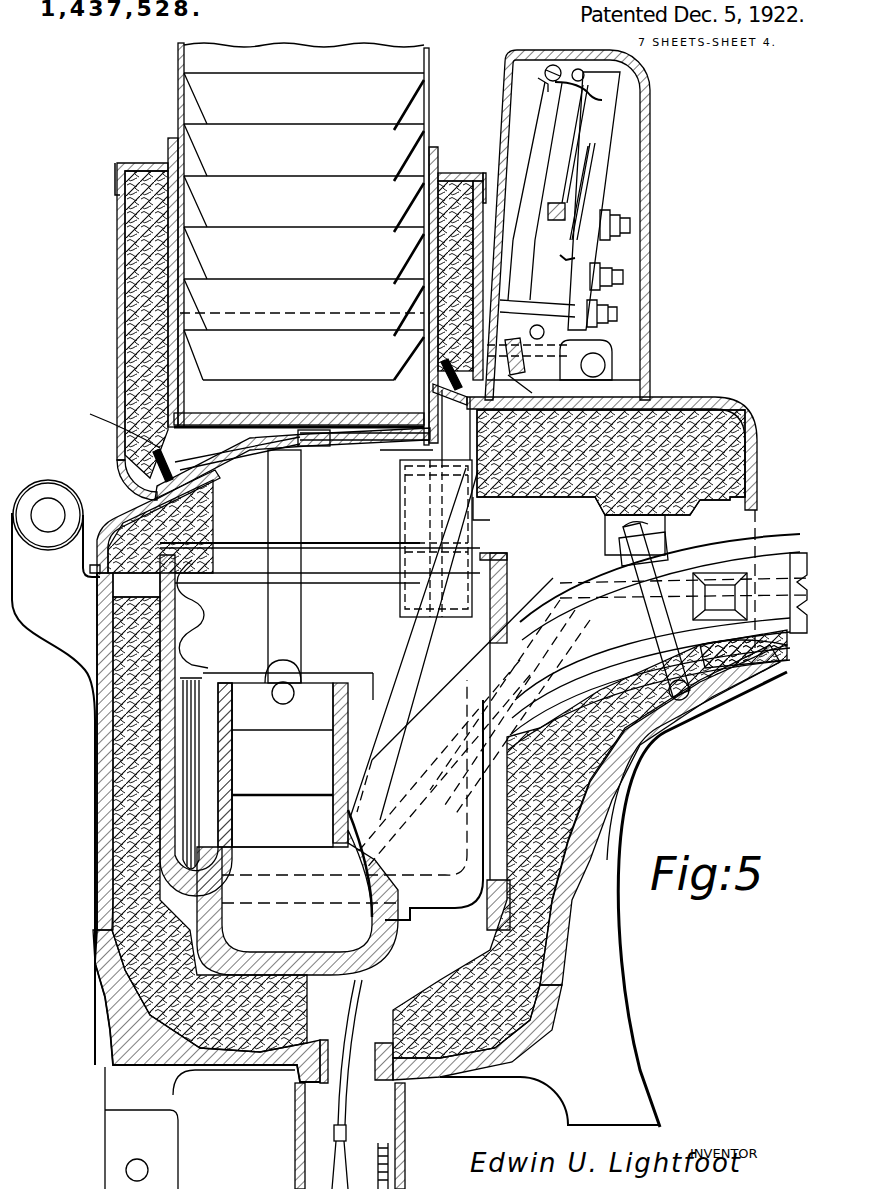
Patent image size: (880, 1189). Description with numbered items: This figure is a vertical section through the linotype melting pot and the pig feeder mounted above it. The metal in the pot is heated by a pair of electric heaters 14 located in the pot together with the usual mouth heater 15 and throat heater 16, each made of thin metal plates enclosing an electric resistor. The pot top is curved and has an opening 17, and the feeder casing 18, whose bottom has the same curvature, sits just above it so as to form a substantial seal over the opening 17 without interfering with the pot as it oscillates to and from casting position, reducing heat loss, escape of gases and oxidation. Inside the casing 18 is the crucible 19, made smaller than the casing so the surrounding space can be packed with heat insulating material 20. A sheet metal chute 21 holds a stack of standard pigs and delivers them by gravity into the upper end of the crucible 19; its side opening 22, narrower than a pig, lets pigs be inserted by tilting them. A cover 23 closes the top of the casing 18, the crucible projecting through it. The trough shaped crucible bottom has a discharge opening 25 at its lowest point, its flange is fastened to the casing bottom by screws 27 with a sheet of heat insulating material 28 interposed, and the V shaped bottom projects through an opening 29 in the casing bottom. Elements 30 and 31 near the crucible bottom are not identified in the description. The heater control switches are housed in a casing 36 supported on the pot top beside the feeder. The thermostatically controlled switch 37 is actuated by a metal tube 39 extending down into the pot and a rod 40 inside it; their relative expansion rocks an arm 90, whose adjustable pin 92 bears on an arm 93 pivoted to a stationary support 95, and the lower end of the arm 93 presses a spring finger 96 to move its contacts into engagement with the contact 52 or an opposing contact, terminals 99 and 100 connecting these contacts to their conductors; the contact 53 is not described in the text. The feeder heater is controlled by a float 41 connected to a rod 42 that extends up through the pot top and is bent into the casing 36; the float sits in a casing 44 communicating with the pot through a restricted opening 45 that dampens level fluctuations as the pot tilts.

The electric heaters 14 is at (190, 730).
The mouth heater 15 is at (715, 545).
The throat heater 16 is at (640, 690).
The opening 17 is at (112, 426).
The feeder casing 18 is at (118, 300).
The crucible 19 is at (168, 225).
The heat insulating material 20 is at (150, 165).
The sheet metal chute 21 is at (178, 75).
The opening 22 is at (429, 85).
The cover 23 is at (117, 178).
The discharge opening 25 is at (305, 450).
The screws 27 is at (140, 472).
The sheet of heat insulating material 28 is at (212, 492).
The opening 29 is at (250, 462).
The bottom plate 30 is at (230, 405).
The plate 31 is at (342, 420).
The casing 36 is at (652, 145).
The thermostatically controlled switch 37 is at (563, 338).
The metal tube 39 is at (408, 655).
The rod 40 is at (508, 343).
The float 41 is at (430, 500).
The rod 42 is at (438, 413).
The casing 44 is at (400, 512).
The restricted opening 45 is at (420, 600).
The contact 52 is at (560, 250).
The terminal 53 is at (620, 240).
The arm 90 is at (540, 116).
The adjustable pin 92 is at (542, 85).
The arm 93 is at (575, 120).
The stationary support 95 is at (605, 126).
The spring finger 96 is at (582, 192).
The terminal 99 is at (625, 276).
The terminal 100 is at (618, 312).